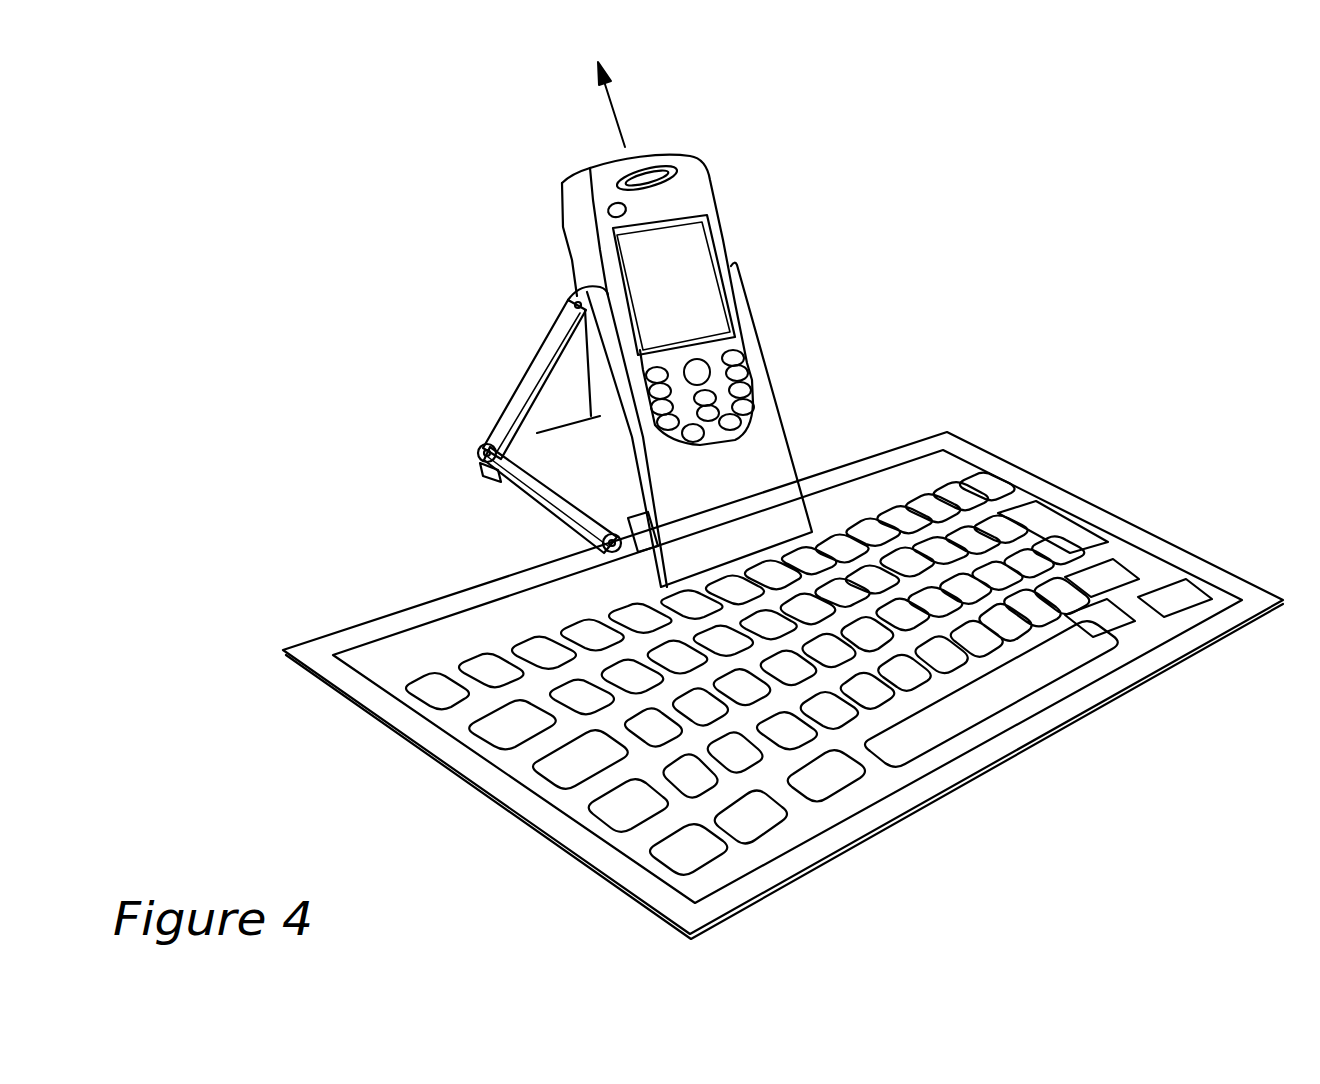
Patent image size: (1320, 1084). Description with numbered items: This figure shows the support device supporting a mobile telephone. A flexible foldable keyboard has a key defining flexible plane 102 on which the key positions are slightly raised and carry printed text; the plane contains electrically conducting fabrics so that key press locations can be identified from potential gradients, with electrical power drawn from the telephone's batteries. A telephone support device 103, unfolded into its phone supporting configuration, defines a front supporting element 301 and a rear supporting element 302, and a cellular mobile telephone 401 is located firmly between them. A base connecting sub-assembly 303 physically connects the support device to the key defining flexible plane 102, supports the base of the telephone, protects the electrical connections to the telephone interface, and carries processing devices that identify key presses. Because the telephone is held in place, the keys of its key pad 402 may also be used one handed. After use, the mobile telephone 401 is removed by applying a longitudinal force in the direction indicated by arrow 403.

The key defining flexible plane 102 is at (963, 743).
The telephone support device 103 is at (488, 487).
The front supporting element 301 is at (753, 462).
The rear supporting element 302 is at (536, 339).
The base connecting sub-assembly 303 is at (648, 562).
The cellular mobile telephone 401 is at (717, 228).
The key pad 402 is at (737, 377).
The arrow 403 is at (620, 115).